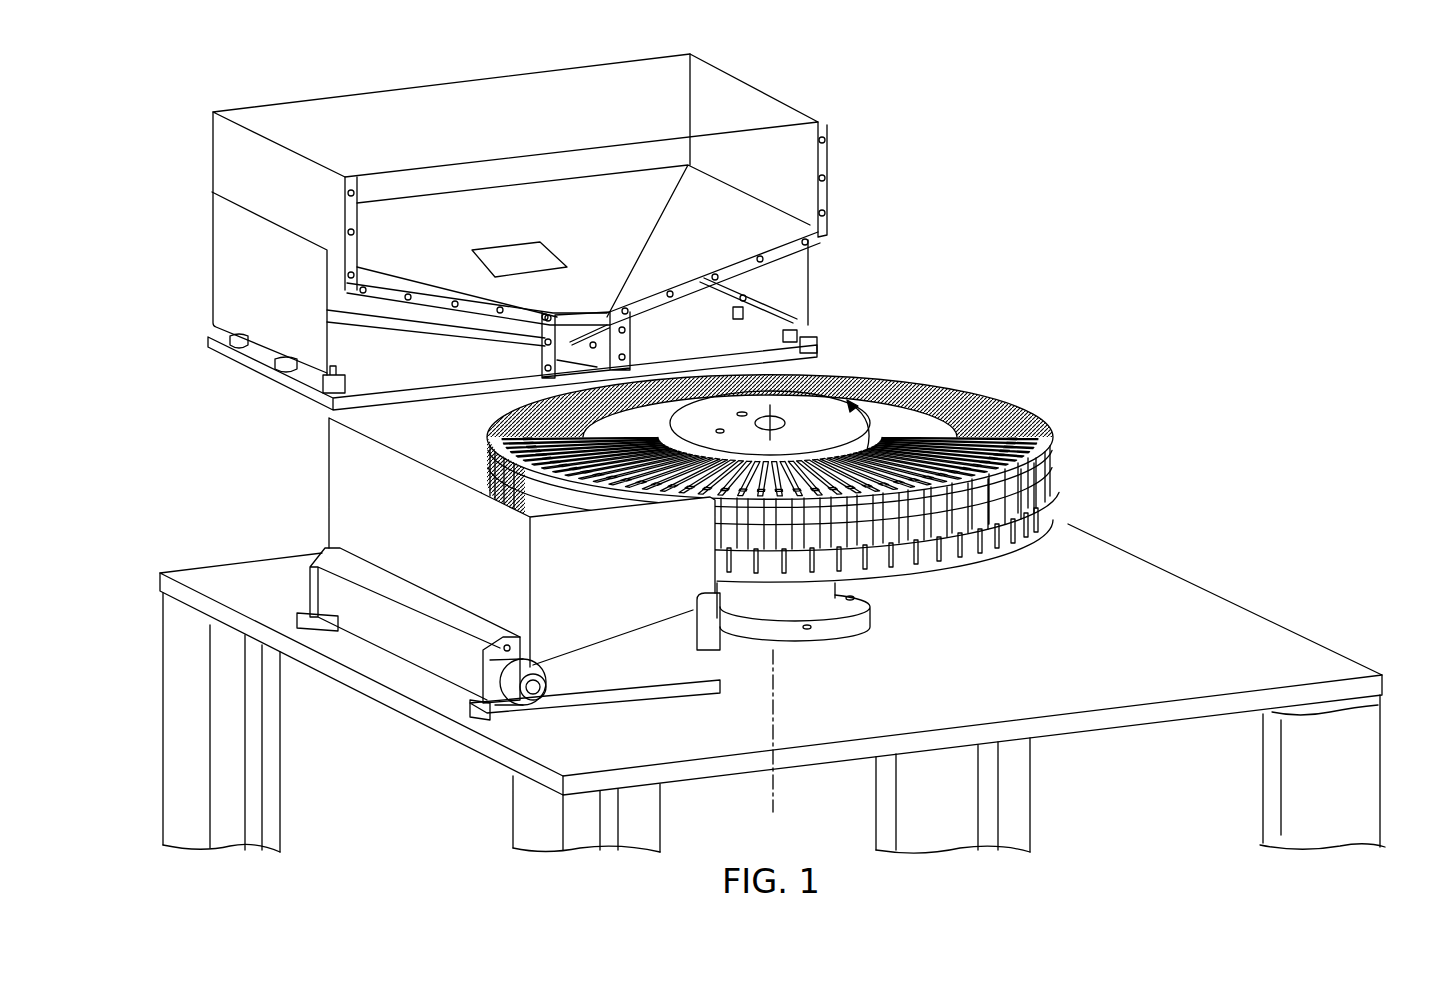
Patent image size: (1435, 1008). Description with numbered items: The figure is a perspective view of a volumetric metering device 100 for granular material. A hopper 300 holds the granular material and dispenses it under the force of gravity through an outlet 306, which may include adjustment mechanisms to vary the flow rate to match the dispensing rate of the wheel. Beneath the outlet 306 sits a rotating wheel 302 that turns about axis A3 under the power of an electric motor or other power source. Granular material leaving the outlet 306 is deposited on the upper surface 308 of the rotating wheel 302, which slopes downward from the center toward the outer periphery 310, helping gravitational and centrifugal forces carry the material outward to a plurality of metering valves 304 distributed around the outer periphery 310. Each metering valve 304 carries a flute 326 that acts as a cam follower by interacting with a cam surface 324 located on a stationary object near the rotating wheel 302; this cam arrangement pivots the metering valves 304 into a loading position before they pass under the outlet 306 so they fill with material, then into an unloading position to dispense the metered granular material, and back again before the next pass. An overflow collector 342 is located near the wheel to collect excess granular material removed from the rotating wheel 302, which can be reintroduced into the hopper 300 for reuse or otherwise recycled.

The volumetric metering device 100 is at (1215, 234).
The hopper 300 is at (819, 119).
The rotating wheel 302 is at (992, 397).
The metering valves 304 is at (1082, 491).
The outlet 306 is at (636, 347).
The upper surface 308 is at (846, 386).
The outer periphery 310 is at (1048, 432).
The cam surface 324 is at (1039, 533).
The flute 326 is at (1070, 512).
The overflow collector 342 is at (340, 476).
The axis A3 is at (778, 791).